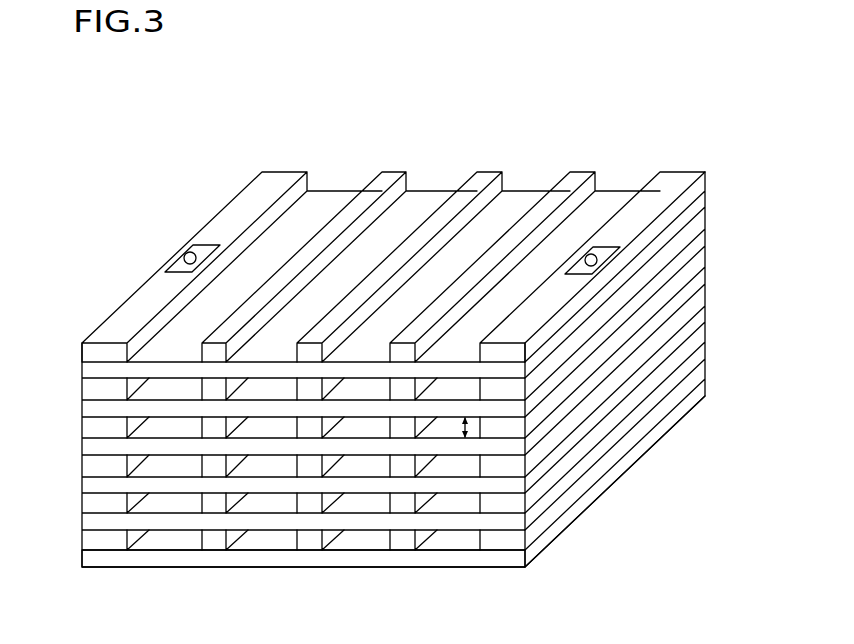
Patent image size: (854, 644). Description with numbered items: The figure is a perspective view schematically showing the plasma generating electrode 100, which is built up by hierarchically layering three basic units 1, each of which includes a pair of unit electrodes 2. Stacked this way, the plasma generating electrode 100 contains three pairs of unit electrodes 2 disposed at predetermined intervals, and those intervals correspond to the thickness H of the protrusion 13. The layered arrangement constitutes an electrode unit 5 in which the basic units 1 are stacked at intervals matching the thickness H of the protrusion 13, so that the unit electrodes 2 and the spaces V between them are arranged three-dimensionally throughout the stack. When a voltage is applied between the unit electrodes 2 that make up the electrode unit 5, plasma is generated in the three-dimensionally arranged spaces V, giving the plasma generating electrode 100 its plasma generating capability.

The plasma generating electrode 100 is at (467, 130).
The electrode unit 5 is at (533, 138).
The protrusion 13 is at (393, 171).
The basic unit 1 is at (76, 342).
The thickness of the protrusion H is at (470, 428).
The space V is at (268, 503).
The unit electrode 2 is at (470, 568).